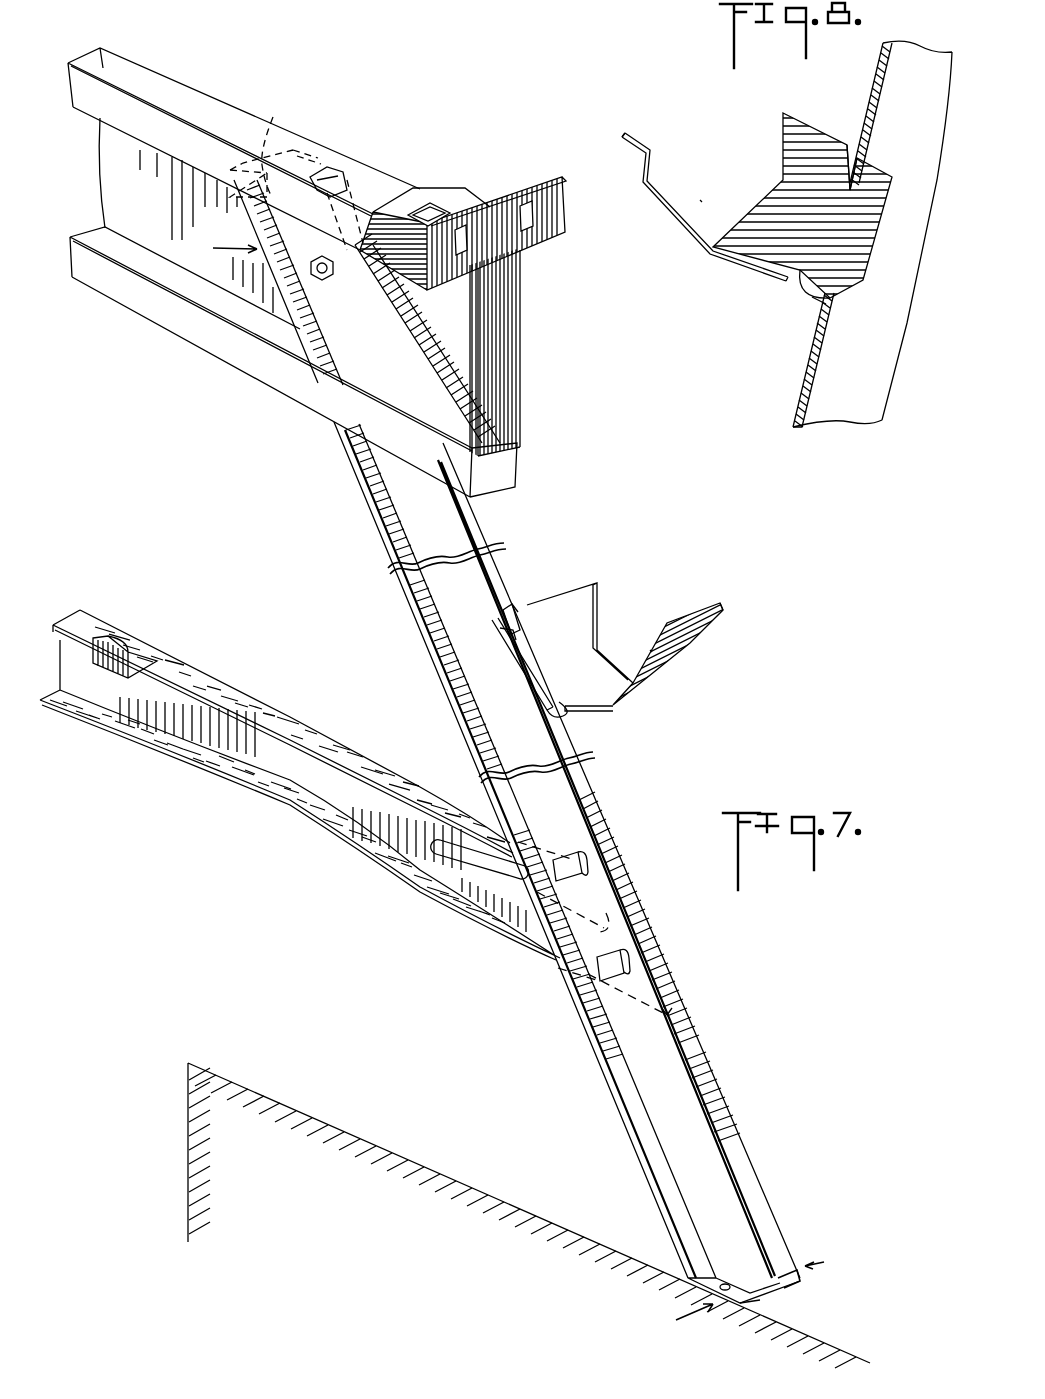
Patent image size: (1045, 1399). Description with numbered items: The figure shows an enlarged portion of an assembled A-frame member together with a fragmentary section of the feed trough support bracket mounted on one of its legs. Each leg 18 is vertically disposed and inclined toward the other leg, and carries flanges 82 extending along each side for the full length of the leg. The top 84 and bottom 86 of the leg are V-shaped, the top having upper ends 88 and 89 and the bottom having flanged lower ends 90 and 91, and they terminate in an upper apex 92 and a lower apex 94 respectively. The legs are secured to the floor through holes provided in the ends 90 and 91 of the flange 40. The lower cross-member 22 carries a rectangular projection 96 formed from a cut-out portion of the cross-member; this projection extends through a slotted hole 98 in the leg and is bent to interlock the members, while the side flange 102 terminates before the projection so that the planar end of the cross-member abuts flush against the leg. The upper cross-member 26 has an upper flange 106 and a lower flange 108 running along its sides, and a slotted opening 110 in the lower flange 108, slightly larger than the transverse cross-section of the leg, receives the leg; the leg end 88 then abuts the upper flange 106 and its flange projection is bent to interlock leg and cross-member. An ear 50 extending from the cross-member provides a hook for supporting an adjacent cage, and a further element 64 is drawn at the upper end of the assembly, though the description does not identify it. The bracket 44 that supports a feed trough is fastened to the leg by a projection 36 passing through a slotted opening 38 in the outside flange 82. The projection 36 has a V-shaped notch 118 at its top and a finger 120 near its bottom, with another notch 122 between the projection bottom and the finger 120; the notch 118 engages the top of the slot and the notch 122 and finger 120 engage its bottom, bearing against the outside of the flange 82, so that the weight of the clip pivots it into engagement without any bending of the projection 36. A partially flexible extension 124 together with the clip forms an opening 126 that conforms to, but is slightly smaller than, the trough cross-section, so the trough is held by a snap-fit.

In FIG. 7, the leg 18 is at (678, 1074).
In FIG. 8, the leg 18 is at (872, 234).
In FIG. 7, the lower cross-member 22 is at (322, 794).
In FIG. 7, the upper cross-member 26 is at (157, 205).
In FIG. 7, the projection 36 is at (520, 688).
In FIG. 8, the projection 36 is at (864, 240).
In FIG. 7, the slotted opening 38 is at (500, 628).
In FIG. 7, the flange 40 is at (676, 1320).
In FIG. 7, the bracket 44 is at (584, 607).
In FIG. 8, the bracket 44 is at (762, 250).
In FIG. 7, the ear 50 is at (125, 638).
In FIG. 7, the clamp block 64 is at (472, 193).
In FIG. 7, the flange 82 is at (473, 513).
In FIG. 8, the flange 82 is at (806, 357).
In FIG. 7, the top 84 is at (264, 250).
In FIG. 7, the bottom 86 is at (824, 1262).
In FIG. 7, the upper end 88 is at (330, 150).
In FIG. 7, the upper end 89 is at (272, 143).
In FIG. 7, the flanged lower end 90 is at (723, 1273).
In FIG. 7, the flanged lower end 91 is at (783, 1282).
In FIG. 7, the upper apex 92 is at (313, 138).
In FIG. 7, the lower apex 94 is at (741, 1303).
In FIG. 7, the rectangular projection 96 is at (580, 857).
In FIG. 7, the slotted hole 98 is at (584, 866).
In FIG. 7, the flange 102 is at (284, 727).
In FIG. 7, the upper flange 106 is at (173, 103).
In FIG. 7, the lower flange 108 is at (142, 300).
In FIG. 7, the slotted opening 110 is at (446, 418).
In FIG. 7, the V-shaped notch 118 is at (520, 608).
In FIG. 8, the V-shaped notch 118 is at (852, 172).
In FIG. 7, the finger 120 is at (580, 719).
In FIG. 8, the finger 120 is at (815, 292).
In FIG. 7, the notch 122 is at (552, 712).
In FIG. 8, the notch 122 is at (822, 292).
In FIG. 7, the flexible extension 124 is at (692, 606).
In FIG. 8, the flexible extension 124 is at (640, 140).
In FIG. 7, the opening 126 is at (660, 648).
In FIG. 8, the opening 126 is at (734, 209).